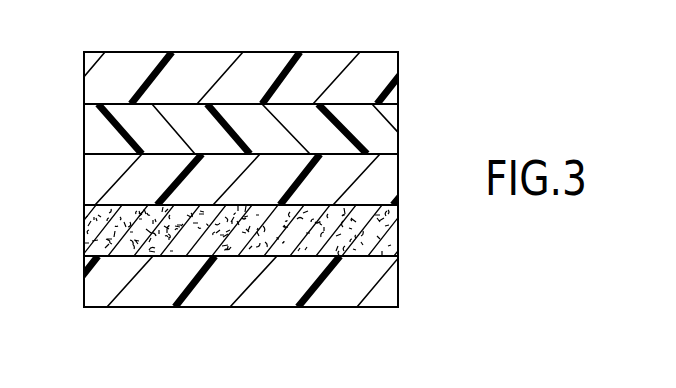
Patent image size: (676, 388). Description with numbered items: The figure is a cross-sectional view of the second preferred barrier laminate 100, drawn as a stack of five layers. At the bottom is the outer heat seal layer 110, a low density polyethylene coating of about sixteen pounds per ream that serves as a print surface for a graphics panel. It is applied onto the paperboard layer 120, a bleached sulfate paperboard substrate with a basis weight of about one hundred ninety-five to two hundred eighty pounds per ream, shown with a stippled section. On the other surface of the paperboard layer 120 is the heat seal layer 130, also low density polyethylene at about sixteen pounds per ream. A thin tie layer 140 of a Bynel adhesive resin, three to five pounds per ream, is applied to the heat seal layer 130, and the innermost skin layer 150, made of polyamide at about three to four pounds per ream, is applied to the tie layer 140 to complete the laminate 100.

The barrier laminate 100 is at (311, 53).
The outer heat seal layer 110 is at (399, 285).
The paperboard layer 120 is at (398, 238).
The heat seal layer 130 is at (398, 175).
The tie layer 140 is at (398, 130).
The skin layer 150 is at (398, 78).